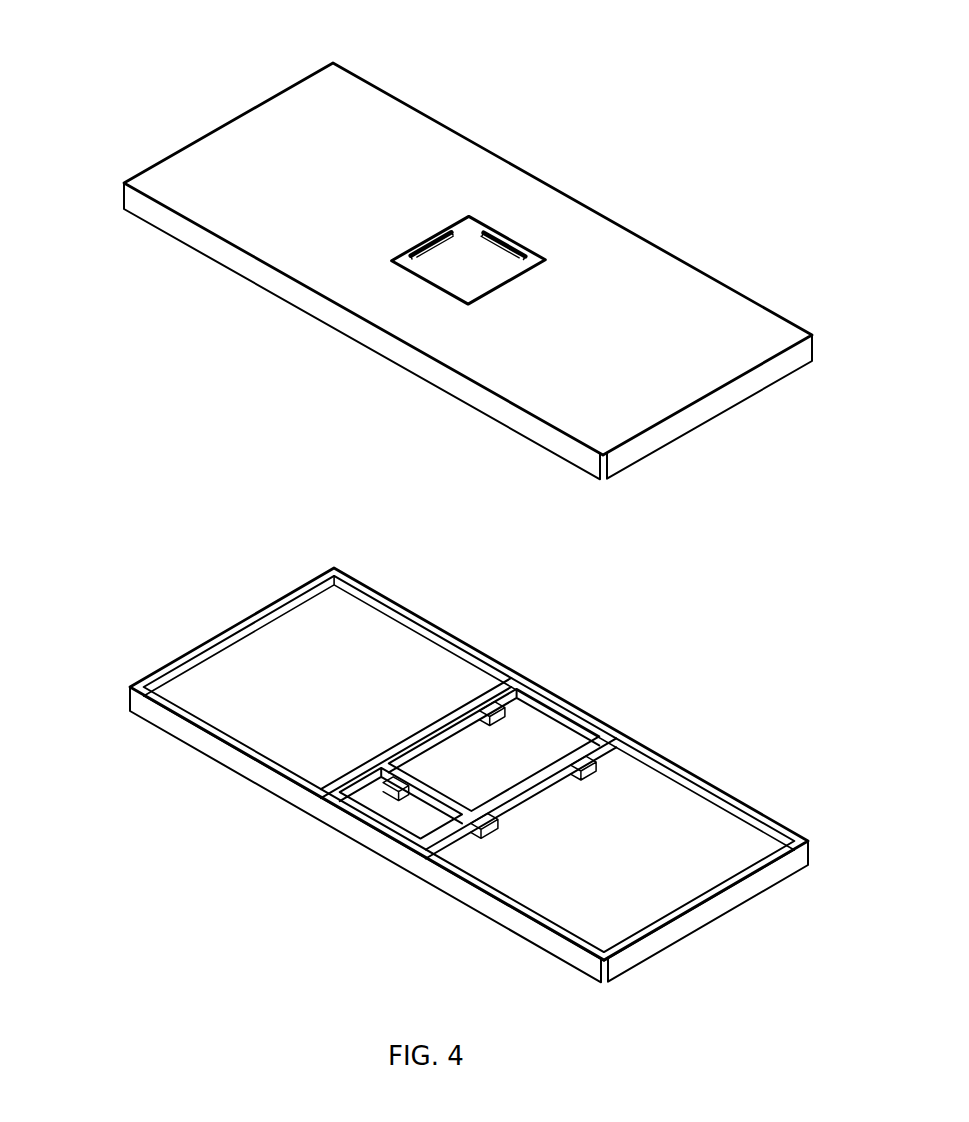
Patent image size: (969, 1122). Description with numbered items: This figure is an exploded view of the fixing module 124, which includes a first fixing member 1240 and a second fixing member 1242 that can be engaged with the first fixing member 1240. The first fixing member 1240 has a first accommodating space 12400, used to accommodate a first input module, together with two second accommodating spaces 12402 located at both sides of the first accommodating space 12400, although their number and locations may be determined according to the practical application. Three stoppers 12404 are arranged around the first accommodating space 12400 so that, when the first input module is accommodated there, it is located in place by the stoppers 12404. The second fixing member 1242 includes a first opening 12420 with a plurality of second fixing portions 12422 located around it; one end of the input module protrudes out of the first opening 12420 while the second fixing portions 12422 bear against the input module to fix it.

The fixing module 124 is at (838, 55).
The second fixing member 1242 is at (142, 148).
The first fixing member 1240 is at (142, 660).
The first opening 12420 is at (468, 258).
The second fixing portions 12422 is at (436, 232).
The second accommodating space 12402 is at (332, 686).
The first accommodating space 12400 is at (494, 760).
The stoppers 12404 is at (494, 713).